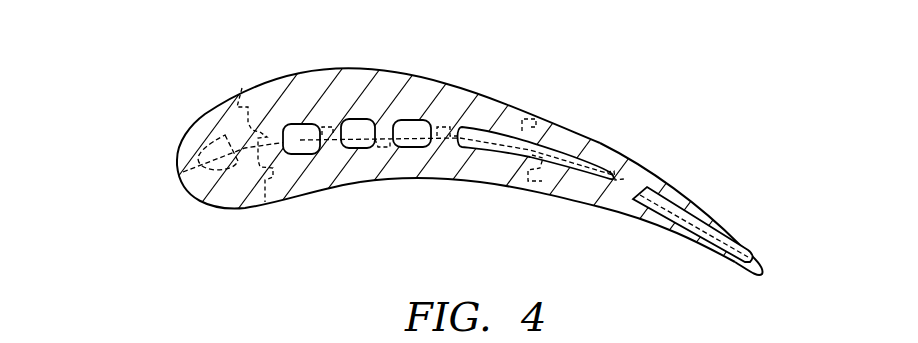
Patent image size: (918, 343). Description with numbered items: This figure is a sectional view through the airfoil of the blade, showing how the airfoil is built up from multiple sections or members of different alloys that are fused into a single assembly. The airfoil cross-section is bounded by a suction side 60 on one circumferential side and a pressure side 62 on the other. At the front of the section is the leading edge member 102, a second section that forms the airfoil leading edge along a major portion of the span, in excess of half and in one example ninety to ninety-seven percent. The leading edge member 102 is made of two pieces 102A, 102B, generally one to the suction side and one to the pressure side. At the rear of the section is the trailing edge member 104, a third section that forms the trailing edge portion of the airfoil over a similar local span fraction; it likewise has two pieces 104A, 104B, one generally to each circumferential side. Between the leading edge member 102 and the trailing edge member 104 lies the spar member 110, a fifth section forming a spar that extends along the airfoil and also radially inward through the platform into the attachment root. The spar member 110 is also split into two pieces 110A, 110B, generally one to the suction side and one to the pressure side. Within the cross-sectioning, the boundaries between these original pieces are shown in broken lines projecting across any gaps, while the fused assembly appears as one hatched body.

The suction side 60 is at (553, 121).
The pressure side 62 is at (513, 185).
The leading edge member 102 is at (160, 131).
The leading edge member piece 102A is at (200, 113).
The leading edge member piece 102B is at (220, 192).
The trailing edge member 104 is at (752, 215).
The trailing edge member piece 104A is at (667, 183).
The trailing edge member piece 104B is at (658, 220).
The spar member 110 is at (500, 82).
The spar member piece 110A is at (418, 98).
The spar member piece 110B is at (430, 160).